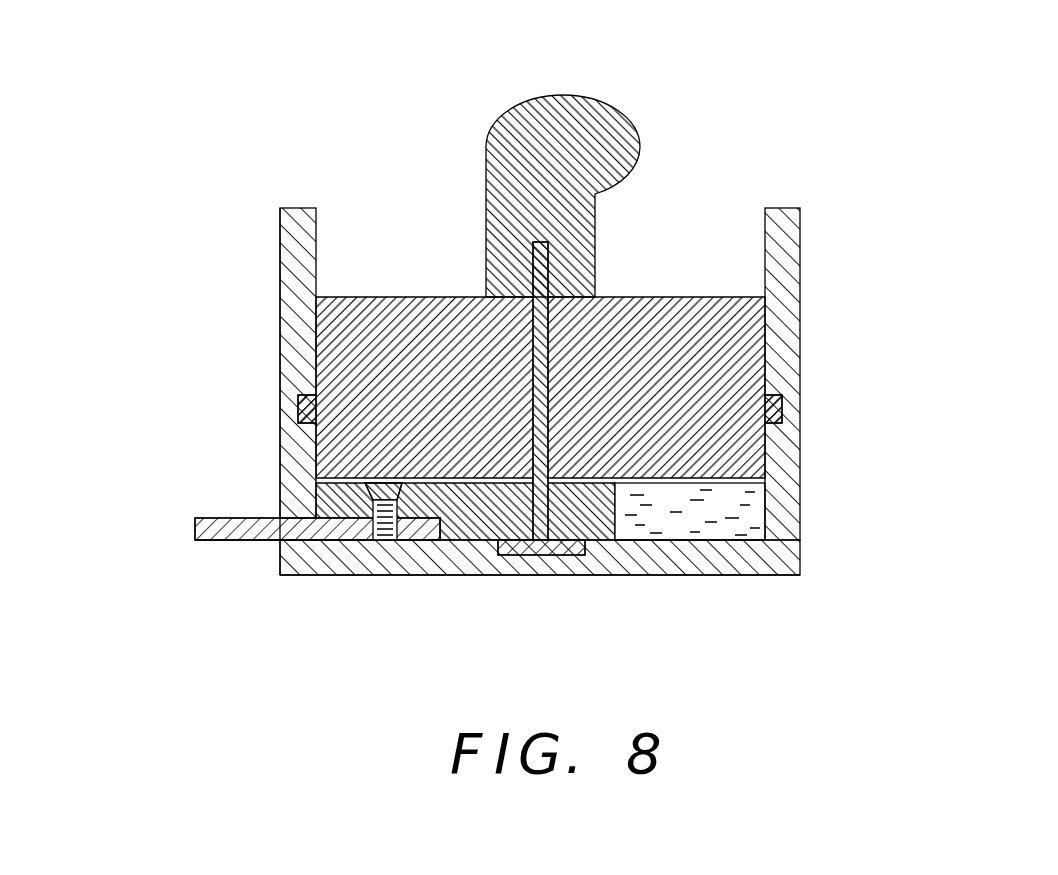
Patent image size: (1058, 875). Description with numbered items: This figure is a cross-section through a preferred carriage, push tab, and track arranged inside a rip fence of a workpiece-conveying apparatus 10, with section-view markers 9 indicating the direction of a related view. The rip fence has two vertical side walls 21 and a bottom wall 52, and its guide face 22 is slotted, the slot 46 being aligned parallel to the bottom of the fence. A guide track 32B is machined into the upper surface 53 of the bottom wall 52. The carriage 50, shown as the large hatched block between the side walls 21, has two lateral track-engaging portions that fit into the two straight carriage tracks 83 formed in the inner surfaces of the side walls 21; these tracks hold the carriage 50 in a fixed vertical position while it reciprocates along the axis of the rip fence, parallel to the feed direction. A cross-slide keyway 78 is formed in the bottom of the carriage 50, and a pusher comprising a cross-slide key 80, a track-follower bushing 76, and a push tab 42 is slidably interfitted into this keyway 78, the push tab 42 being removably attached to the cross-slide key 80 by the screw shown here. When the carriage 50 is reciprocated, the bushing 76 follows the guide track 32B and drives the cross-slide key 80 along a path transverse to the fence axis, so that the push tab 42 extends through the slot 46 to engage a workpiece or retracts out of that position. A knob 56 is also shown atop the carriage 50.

The fluid dispensing assembly 10 is at (725, 193).
The side walls 21 is at (317, 208).
The guide face portion 22 is at (280, 227).
The section line 9 is at (248, 287).
The knob 56 is at (633, 120).
The carriage 50 is at (712, 335).
The straight carriage tracks 83 is at (300, 408).
The push tab 42 is at (195, 537).
The slot 46 is at (310, 541).
The cross-slide keyway 78 is at (743, 512).
The bottom wall 52 is at (762, 575).
The upper surface 53 is at (687, 540).
The track 32B is at (605, 540).
The cross-slide key 80 is at (457, 537).
The bushing 76 is at (513, 557).